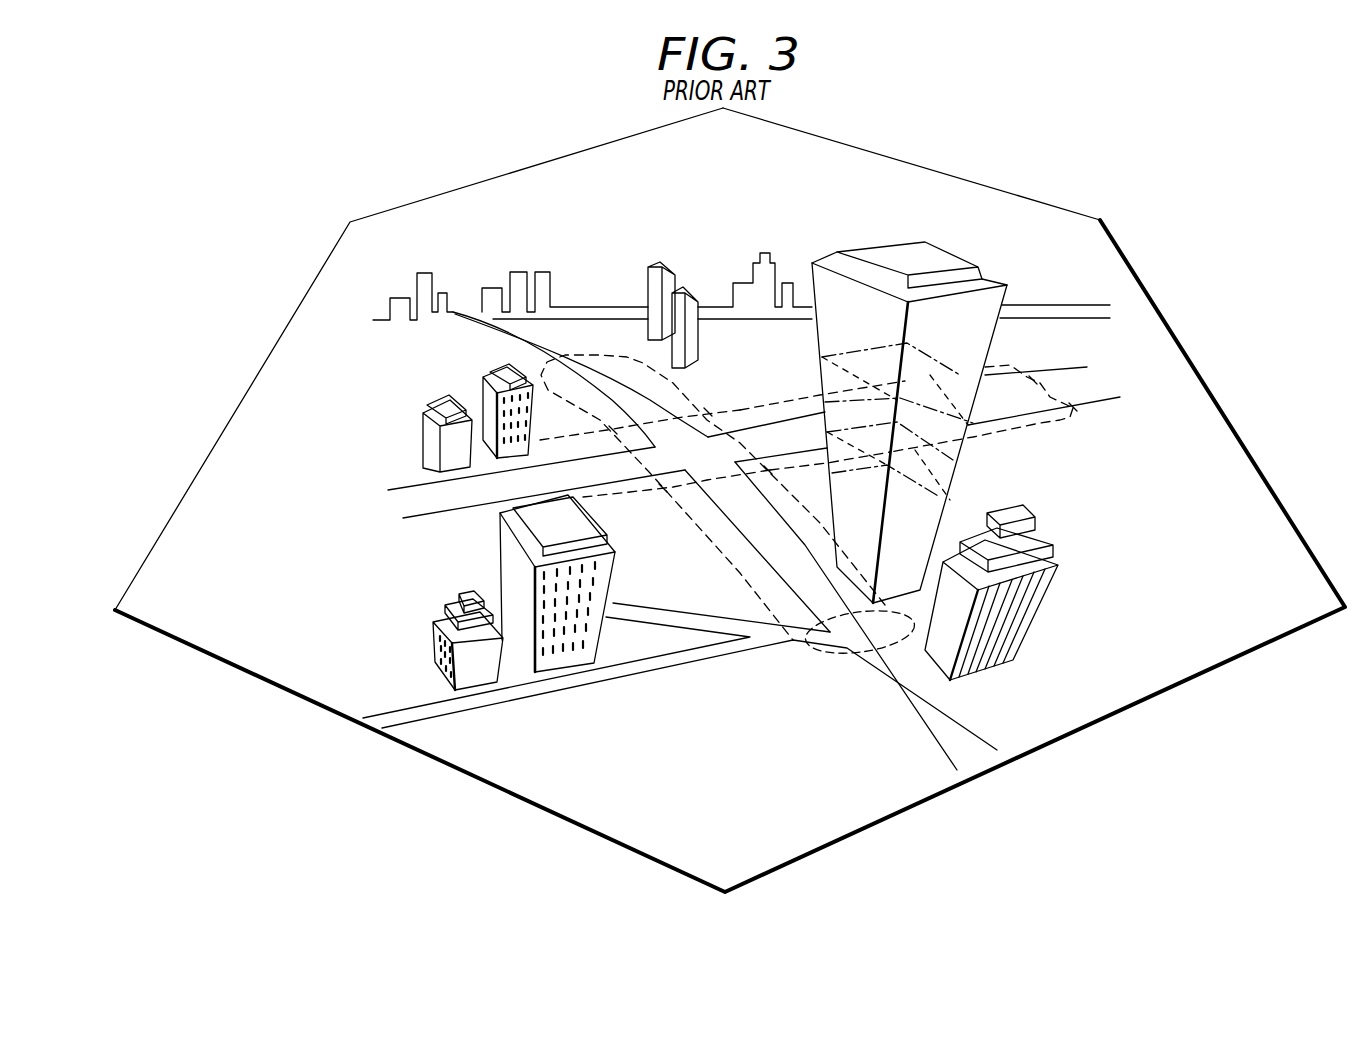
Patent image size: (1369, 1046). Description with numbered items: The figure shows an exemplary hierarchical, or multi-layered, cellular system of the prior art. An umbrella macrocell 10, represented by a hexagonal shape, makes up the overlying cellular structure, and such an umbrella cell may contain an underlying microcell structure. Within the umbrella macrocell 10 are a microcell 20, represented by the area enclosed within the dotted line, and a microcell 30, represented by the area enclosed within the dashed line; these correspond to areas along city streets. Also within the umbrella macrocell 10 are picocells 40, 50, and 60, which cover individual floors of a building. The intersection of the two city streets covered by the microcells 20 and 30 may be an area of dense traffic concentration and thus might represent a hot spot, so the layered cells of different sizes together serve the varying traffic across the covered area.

The umbrella macrocell 10 is at (446, 764).
The microcell 20 is at (608, 355).
The microcell 30 is at (457, 494).
The picocell 40 is at (960, 377).
The picocell 50 is at (943, 457).
The picocell 60 is at (880, 543).